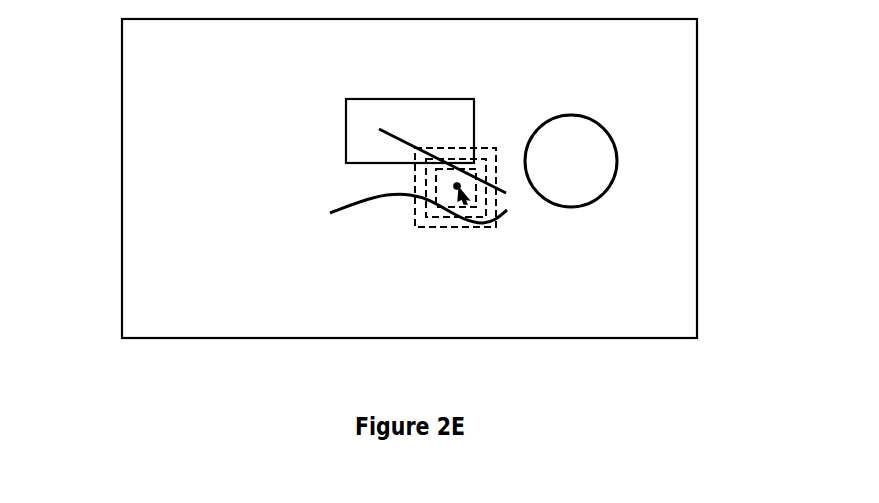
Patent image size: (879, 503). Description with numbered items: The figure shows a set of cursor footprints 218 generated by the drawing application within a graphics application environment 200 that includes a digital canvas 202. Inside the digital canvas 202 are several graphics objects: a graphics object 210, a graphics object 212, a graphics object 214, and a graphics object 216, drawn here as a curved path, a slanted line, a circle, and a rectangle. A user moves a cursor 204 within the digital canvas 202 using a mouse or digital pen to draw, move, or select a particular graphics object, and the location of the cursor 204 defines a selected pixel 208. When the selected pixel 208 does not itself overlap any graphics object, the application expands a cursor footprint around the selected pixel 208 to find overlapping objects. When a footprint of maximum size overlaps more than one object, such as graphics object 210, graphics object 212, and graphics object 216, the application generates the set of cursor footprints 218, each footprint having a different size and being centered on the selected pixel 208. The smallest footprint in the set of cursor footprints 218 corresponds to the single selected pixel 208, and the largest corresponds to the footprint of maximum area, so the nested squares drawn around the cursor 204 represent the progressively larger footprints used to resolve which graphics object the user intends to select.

The graphics application environment 200 is at (731, 58).
The digital canvas 202 is at (122, 115).
The cursor 204 is at (468, 203).
The selected pixel 208 is at (447, 183).
The graphics object 210 is at (505, 217).
The graphics object 212 is at (390, 130).
The graphics object 214 is at (607, 128).
The graphics object 216 is at (392, 98).
The set of cursor footprints 218 is at (414, 212).